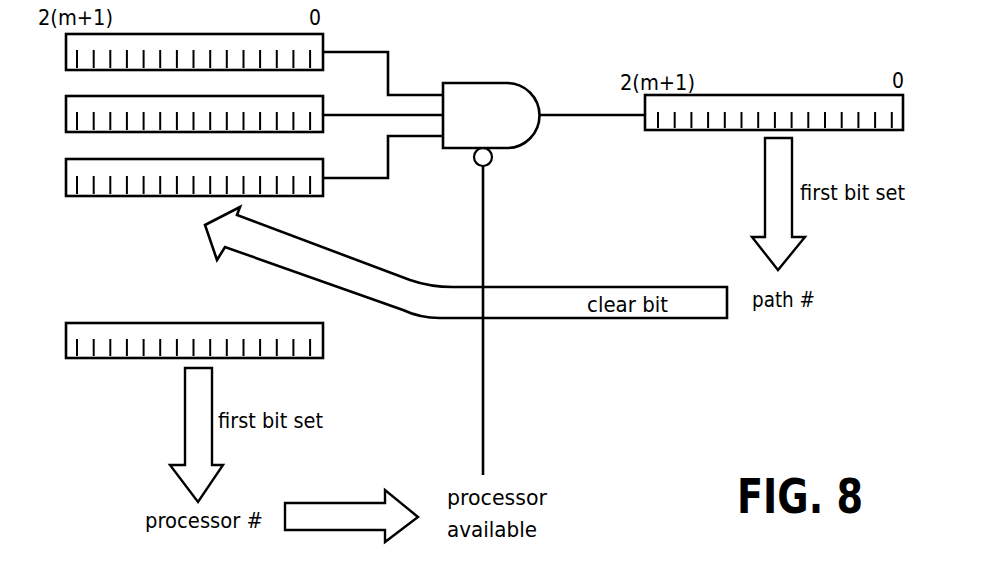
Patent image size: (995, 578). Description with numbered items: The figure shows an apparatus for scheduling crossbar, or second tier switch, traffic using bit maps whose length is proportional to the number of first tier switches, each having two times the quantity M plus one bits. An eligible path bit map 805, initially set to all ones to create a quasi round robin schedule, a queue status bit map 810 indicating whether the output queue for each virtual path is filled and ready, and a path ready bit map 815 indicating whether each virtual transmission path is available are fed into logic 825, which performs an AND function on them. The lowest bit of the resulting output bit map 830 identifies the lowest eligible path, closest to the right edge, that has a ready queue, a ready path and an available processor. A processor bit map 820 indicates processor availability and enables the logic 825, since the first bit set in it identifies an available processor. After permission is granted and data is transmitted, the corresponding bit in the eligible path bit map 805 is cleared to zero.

The eligible path bit map 805 is at (60, 191).
The queue status bit map 810 is at (60, 128).
The path ready bit map 815 is at (60, 66).
The processor bit map 820 is at (60, 355).
The logic 825 is at (501, 75).
The output bit map 830 is at (798, 90).